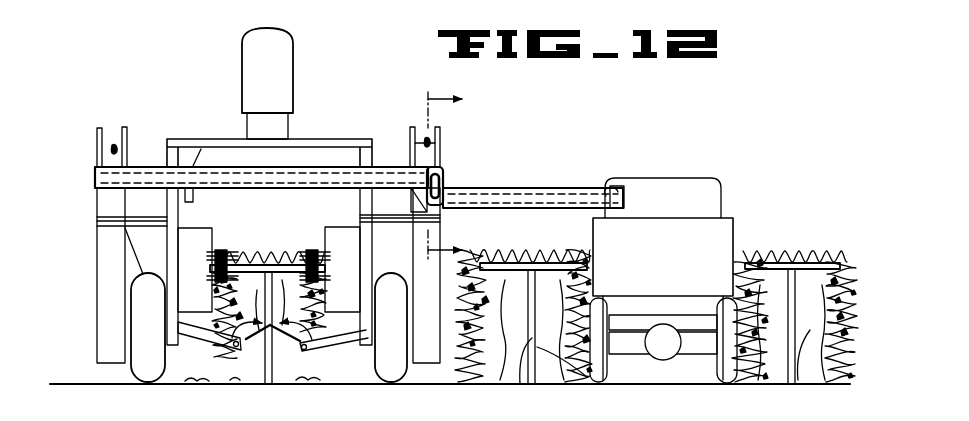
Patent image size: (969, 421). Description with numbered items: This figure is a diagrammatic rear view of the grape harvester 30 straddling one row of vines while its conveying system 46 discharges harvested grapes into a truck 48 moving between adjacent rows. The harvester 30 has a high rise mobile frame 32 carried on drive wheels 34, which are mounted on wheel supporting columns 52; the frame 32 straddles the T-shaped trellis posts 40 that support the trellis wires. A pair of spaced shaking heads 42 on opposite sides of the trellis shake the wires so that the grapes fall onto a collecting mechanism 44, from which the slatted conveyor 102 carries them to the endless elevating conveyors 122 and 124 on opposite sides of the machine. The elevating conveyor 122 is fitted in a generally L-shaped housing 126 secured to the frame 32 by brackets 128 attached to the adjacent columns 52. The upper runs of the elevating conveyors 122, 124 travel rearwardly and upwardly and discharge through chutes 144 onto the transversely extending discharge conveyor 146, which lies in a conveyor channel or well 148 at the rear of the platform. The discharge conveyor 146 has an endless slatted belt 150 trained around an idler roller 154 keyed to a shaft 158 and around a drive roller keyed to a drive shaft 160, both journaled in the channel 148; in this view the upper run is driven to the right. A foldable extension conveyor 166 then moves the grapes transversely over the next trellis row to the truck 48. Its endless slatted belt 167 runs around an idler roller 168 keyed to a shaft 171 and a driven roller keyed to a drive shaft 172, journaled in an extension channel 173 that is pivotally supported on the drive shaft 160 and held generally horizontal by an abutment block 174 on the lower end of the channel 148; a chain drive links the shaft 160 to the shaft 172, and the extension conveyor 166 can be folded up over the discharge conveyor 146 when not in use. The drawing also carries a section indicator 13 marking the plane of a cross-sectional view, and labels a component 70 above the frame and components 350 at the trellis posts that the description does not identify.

The grape harvester 30 is at (170, 72).
The hydraulic cylinder 70 is at (282, 79).
The high rise mobile frame 32 is at (308, 138).
The section line 13 is at (446, 174).
The conveying system 46 is at (441, 139).
The chutes 144 is at (107, 156).
The drive shaft 160 is at (441, 178).
The drive shaft 172 is at (444, 200).
The foldable extension conveyor 166 is at (542, 187).
The endless slatted belt 167 is at (508, 190).
The extension channel 173 is at (573, 188).
The idler roller 168 is at (610, 178).
The shaft 171 is at (620, 192).
The truck 48 is at (720, 192).
The endless slatted belt 150 is at (150, 167).
The discharge conveyor 146 is at (228, 165).
The shaft 158 is at (106, 176).
The idler roller 154 is at (108, 188).
The conveyor channel 148 is at (246, 196).
The elevating conveyor 124 is at (98, 288).
The shaking heads 42 is at (135, 252).
The T-shaped trellis posts 40 is at (266, 262).
The wire post 350 is at (268, 254).
The wheel supporting columns 52 is at (170, 292).
The drive wheels 34 is at (159, 358).
The conveyor 102 is at (205, 338).
The collecting mechanism 44 is at (318, 354).
The abutment block 174 is at (415, 212).
The brackets 128 is at (440, 218).
The L-shaped housing 126 is at (438, 234).
The elevating conveyor 122 is at (432, 358).